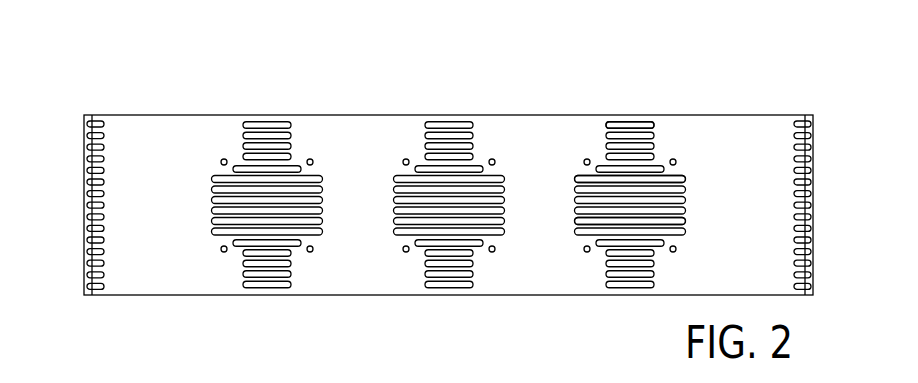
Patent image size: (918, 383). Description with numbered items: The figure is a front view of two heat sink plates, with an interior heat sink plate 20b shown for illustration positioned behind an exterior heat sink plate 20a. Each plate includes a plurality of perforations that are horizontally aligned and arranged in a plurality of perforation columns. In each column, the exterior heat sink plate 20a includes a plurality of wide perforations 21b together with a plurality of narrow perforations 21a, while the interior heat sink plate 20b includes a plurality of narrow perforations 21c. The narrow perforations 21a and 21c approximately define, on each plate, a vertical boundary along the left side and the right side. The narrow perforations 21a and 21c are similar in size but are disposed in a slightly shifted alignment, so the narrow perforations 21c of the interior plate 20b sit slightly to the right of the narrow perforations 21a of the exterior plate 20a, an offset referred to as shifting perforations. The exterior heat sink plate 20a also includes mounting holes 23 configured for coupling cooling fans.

The exterior heat sink plate 20a is at (448, 150).
The interior heat sink plate 20b is at (448, 150).
The narrow perforations 21a is at (647, 122).
The wide perforations 21b is at (684, 177).
The narrow perforations 21c is at (653, 222).
The mounting holes 23 is at (505, 189).